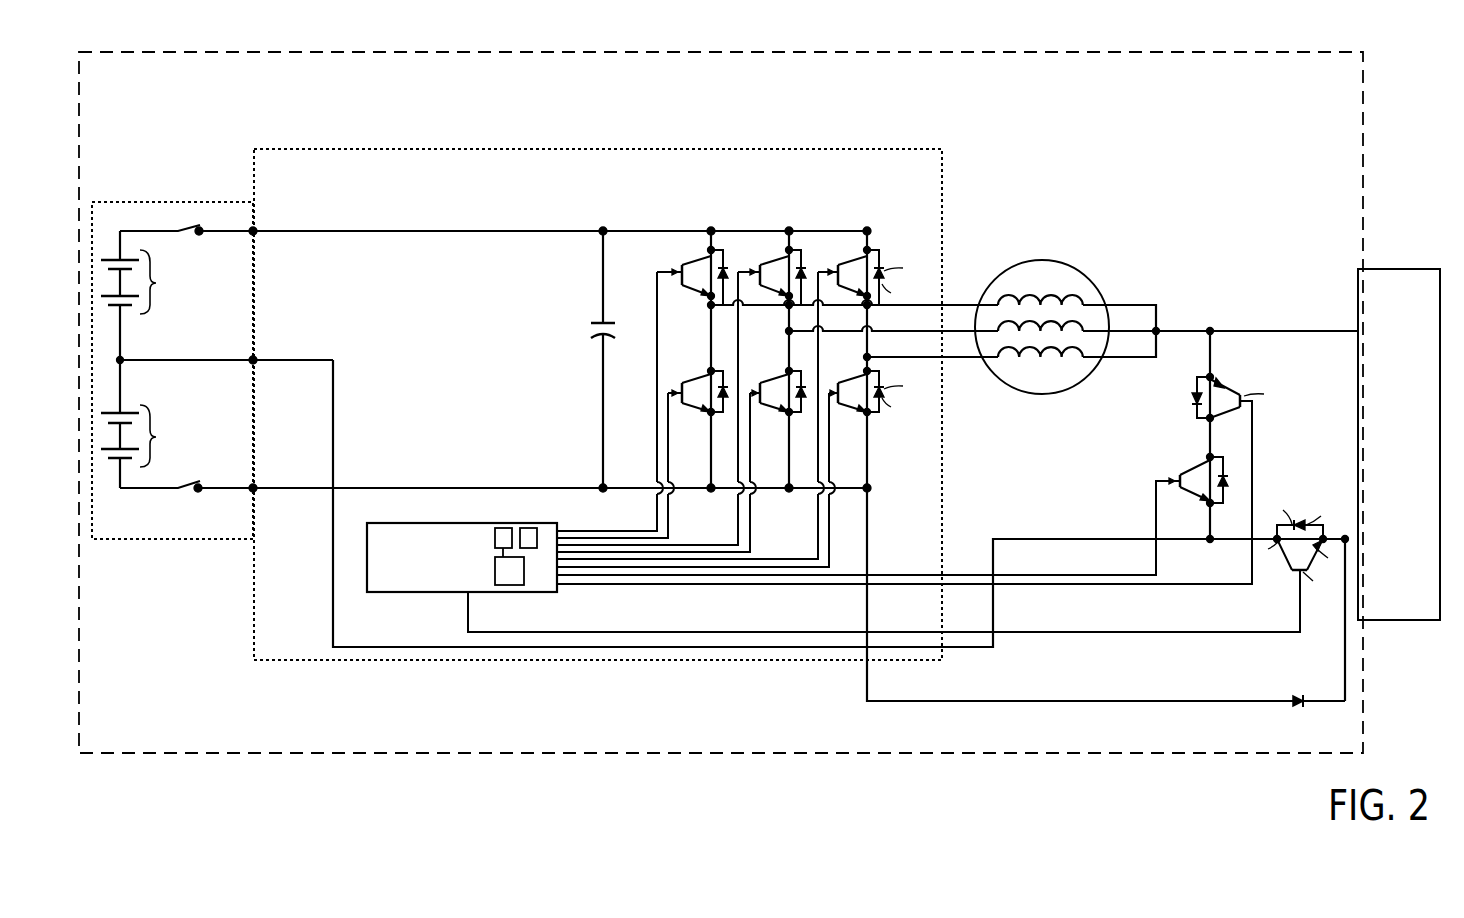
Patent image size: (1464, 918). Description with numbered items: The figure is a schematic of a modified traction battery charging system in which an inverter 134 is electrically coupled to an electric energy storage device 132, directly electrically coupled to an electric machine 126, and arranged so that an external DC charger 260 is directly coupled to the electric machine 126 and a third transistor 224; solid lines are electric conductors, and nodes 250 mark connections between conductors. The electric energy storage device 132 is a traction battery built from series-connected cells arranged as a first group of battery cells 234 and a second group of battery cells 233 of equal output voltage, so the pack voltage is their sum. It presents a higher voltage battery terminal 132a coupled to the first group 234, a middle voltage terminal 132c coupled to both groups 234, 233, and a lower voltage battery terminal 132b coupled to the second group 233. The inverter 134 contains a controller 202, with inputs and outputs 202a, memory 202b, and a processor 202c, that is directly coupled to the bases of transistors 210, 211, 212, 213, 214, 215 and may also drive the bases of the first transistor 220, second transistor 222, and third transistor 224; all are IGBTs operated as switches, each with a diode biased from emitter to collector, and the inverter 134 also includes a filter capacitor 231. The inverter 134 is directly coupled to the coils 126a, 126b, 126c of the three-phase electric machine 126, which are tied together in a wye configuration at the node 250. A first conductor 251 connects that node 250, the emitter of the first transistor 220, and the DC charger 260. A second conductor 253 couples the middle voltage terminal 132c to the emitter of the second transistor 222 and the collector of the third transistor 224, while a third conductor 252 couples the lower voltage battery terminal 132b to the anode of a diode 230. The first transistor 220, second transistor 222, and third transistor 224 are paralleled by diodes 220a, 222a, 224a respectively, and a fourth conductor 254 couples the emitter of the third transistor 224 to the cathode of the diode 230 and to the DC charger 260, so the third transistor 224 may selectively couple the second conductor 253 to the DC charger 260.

The diode 230 is at (1302, 703).
The external DC charger 260 is at (1399, 444).
The inverter 134 is at (552, 148).
The electric energy storage device 132 is at (156, 202).
The higher voltage battery terminal 132a is at (256, 230).
The lower voltage battery terminal 132b is at (256, 488).
The middle voltage terminal 132c is at (256, 360).
The first group of battery cells 234 is at (149, 282).
The second group of battery cells 233 is at (149, 436).
The filter capacitor 231 is at (608, 322).
The transistor 210 is at (706, 257).
The transistor 211 is at (696, 371).
The transistor 212 is at (784, 257).
The transistor 213 is at (776, 371).
The transistor 214 is at (862, 257).
The transistor 215 is at (854, 371).
The controller 202 is at (601, 445).
The inputs and outputs 202a is at (500, 528).
The memory 202b is at (535, 517).
The processor 202c is at (512, 577).
The electric machine 126 is at (1064, 312).
The coil 126a is at (1030, 288).
The coil 126b is at (1083, 330).
The coil 126c is at (1058, 356).
The node 250 is at (1158, 329).
The first conductor 251 is at (1243, 329).
The third conductor 252 is at (1066, 700).
The second conductor 253 is at (1010, 539).
The fourth conductor 254 is at (1344, 536).
The first transistor 220 is at (929, 471).
The diode 220a is at (1194, 396).
The second transistor 222 is at (928, 506).
The diode 222a is at (1230, 482).
The third transistor 224 is at (903, 558).
The diode 224a is at (1300, 522).